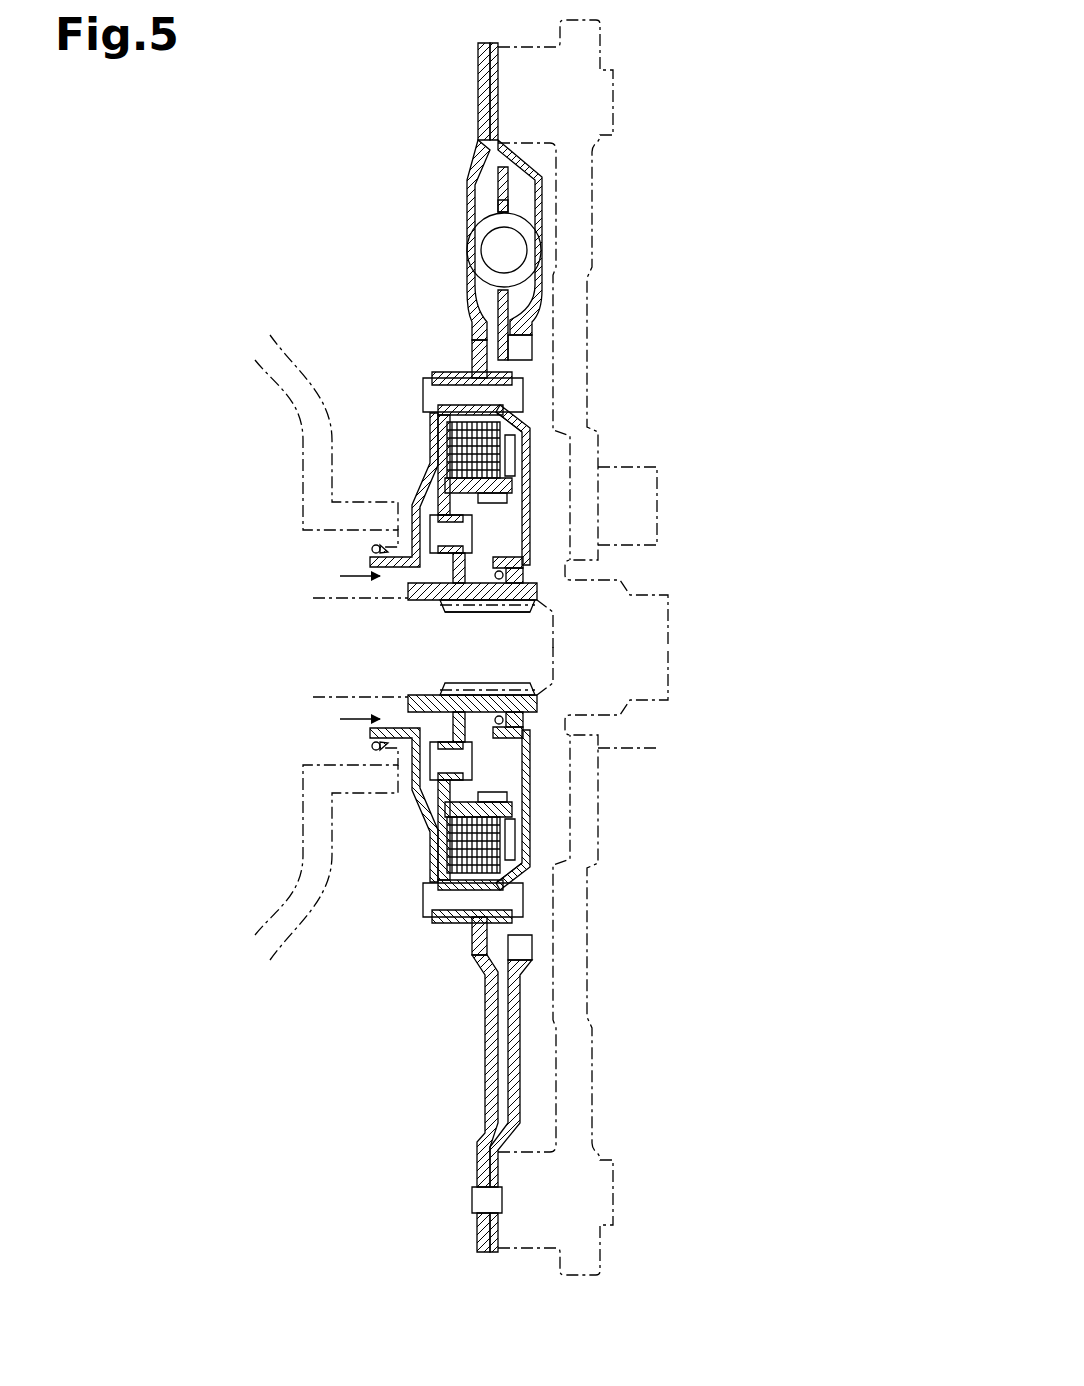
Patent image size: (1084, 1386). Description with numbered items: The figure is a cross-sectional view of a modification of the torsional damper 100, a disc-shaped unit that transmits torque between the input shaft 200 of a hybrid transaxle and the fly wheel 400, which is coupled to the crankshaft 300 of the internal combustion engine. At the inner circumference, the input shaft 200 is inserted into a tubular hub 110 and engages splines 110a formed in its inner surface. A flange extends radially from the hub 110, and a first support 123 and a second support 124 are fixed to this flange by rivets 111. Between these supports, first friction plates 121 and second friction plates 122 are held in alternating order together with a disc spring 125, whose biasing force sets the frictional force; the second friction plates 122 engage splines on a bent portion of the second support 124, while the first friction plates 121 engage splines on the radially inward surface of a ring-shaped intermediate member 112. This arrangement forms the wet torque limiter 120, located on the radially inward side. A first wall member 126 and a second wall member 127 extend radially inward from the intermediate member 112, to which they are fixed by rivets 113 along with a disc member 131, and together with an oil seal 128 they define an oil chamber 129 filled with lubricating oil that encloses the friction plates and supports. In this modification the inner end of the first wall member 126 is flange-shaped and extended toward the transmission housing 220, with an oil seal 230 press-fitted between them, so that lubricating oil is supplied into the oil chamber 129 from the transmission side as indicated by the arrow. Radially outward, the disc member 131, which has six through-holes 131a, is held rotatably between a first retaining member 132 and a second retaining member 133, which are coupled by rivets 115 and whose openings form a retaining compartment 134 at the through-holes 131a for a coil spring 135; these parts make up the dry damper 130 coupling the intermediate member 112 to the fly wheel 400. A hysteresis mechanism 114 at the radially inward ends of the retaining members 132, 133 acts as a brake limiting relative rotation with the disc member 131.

The torsional damper 100 is at (352, 218).
The hub 110 is at (425, 602).
The splines 110a is at (497, 614).
The rivets 111 is at (430, 524).
The intermediate member 112 is at (470, 370).
The rivets 113 is at (425, 392).
The hysteresis mechanism 114 is at (532, 345).
The rivets 115 is at (472, 1200).
The torque limiter 120 is at (366, 337).
The first friction plates 121 is at (440, 422).
The second friction plates 122 is at (442, 462).
The first support 123 is at (430, 498).
The second support 124 is at (478, 483).
The disc spring 125 is at (530, 430).
The first wall member 126 is at (430, 440).
The second wall member 127 is at (530, 455).
The oil seal 128 is at (528, 572).
The oil chamber 129 is at (512, 540).
The damper 130 is at (440, 182).
The disc member 131 is at (512, 184).
The through-holes 131a is at (510, 204).
The first retaining member 132 is at (478, 125).
The second retaining member 133 is at (498, 125).
The retaining compartment 134 is at (470, 212).
The coil spring 135 is at (470, 262).
The input shaft 200 is at (313, 598).
The housing 220 is at (303, 445).
The oil seal 230 is at (365, 549).
The crankshaft 300 is at (657, 545).
The fly wheel 400 is at (590, 295).